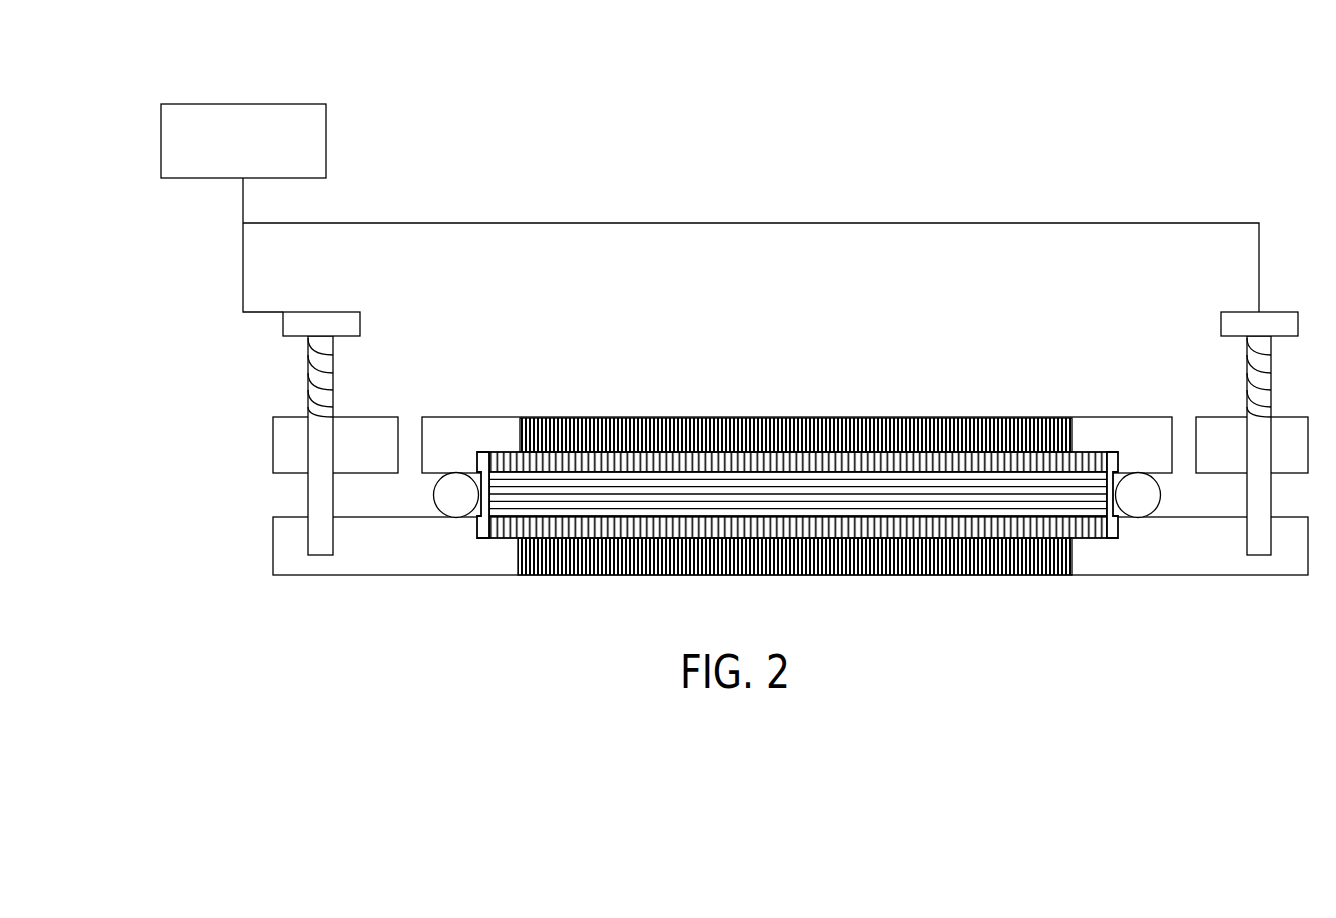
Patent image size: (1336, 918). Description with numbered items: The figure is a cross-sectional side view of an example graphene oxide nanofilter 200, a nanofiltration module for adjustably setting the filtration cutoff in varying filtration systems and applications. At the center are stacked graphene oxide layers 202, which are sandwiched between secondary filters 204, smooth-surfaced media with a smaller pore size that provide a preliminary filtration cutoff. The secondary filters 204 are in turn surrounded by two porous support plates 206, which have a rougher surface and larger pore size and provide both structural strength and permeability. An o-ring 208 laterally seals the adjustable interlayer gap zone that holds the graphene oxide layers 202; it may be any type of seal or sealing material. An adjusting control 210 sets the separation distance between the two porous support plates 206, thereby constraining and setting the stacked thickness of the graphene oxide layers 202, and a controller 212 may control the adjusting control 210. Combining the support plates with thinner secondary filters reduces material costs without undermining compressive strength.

The nanofilter 200 is at (1224, 187).
The graphene oxide layers 202 is at (580, 490).
The secondary filters 204 is at (695, 446).
The porous support plates 206 is at (812, 433).
The o-ring 208 is at (436, 509).
The adjusting control 210 is at (322, 317).
The controller 212 is at (256, 103).